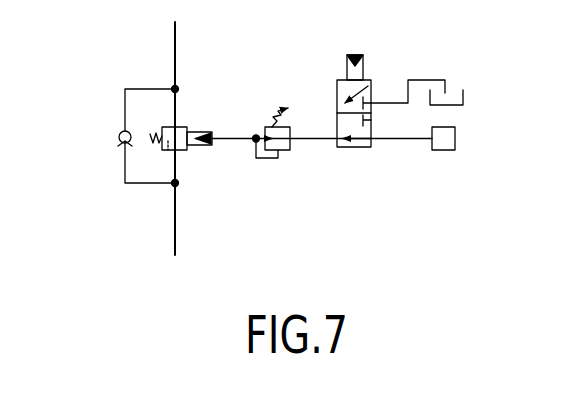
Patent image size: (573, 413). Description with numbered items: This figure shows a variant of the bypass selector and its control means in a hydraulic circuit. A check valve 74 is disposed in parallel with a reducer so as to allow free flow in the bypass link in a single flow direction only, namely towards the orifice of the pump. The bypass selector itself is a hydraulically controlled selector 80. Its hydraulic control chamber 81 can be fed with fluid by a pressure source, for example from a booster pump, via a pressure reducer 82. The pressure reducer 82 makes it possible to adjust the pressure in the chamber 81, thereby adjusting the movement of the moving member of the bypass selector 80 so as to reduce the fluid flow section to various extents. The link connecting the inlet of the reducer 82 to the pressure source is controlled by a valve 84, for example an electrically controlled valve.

The check valve 74 is at (118, 126).
The hydraulically controlled selector 80 is at (190, 125).
The hydraulic control chamber 81 is at (193, 150).
The pressure reducer 82 is at (292, 157).
The valve 84 is at (351, 151).